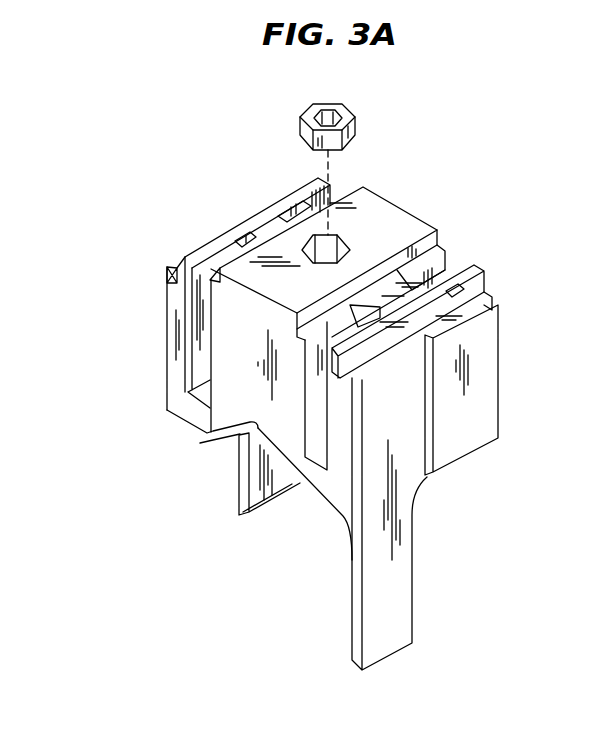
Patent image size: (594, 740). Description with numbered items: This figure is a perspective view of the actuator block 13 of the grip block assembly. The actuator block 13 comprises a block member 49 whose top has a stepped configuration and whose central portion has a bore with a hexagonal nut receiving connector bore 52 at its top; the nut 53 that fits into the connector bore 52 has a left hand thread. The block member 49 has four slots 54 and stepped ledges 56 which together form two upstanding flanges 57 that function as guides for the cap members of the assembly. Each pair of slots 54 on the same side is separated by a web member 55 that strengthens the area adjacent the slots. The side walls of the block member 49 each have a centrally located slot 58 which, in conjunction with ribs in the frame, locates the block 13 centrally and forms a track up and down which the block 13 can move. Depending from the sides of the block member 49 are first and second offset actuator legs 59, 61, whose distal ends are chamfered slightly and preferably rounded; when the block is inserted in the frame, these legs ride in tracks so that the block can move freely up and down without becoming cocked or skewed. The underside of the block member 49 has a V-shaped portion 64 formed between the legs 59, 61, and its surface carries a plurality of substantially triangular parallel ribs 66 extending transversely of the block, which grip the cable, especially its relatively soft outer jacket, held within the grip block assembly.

The actuator block 13 is at (110, 389).
The block member 49 is at (403, 212).
The hexagonal nut receiving connector bore 52 is at (348, 247).
The nut 53 is at (302, 130).
The slots 54 is at (302, 212).
The web member 55 is at (388, 303).
The stepped ledges 56 is at (170, 268).
The upstanding flanges 57 is at (220, 235).
The slots 58 is at (432, 410).
The first actuator leg 59 is at (360, 608).
The second actuator leg 61 is at (243, 472).
The V-shaped portion 64 is at (212, 440).
The ribs 66 is at (222, 436).